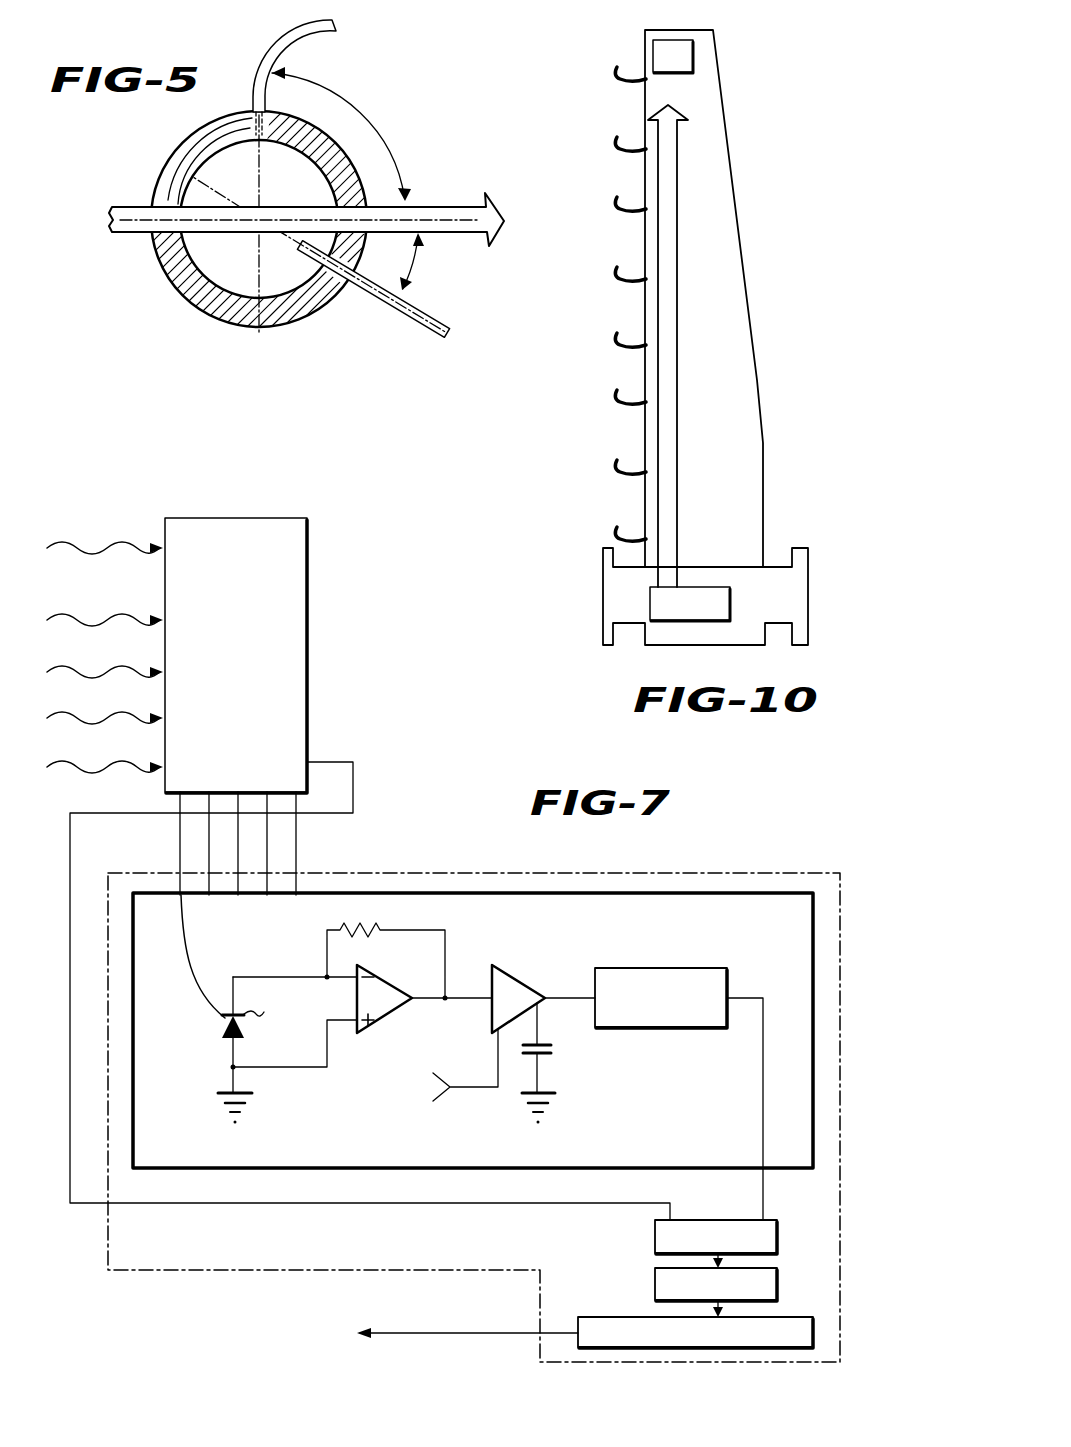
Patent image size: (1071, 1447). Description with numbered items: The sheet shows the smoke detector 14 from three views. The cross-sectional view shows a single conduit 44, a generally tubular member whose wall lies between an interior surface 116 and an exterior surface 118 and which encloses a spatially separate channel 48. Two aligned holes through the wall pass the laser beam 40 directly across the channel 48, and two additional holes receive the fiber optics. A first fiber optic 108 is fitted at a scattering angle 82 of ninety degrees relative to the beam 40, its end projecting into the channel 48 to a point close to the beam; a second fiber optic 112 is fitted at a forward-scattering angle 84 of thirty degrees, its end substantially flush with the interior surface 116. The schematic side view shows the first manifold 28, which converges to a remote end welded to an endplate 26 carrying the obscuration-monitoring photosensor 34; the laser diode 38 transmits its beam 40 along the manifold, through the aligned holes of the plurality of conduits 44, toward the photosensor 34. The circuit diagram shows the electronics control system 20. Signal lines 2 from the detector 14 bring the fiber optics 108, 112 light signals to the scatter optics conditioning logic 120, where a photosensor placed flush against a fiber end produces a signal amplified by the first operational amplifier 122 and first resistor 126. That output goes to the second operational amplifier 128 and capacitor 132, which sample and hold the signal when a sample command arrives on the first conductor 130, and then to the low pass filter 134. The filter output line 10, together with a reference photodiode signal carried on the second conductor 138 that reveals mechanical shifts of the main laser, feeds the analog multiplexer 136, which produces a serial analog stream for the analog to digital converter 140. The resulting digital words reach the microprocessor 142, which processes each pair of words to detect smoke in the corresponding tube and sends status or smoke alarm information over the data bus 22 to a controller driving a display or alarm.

In FIG. 5, the fiber optic 108 is at (313, 37).
In FIG. 7, the fiber optic 108 is at (191, 973).
In FIG. 5, the forward-scattering angle 84 is at (363, 108).
In FIG. 5, the channel 48 is at (306, 190).
In FIG. 5, the laser beam 40 is at (122, 232).
In FIG. 10, the laser beam 40 is at (677, 281).
In FIG. 5, the interior surface 116 is at (200, 255).
In FIG. 5, the exterior surface 118 is at (223, 323).
In FIG. 5, the conduit 44 is at (307, 323).
In FIG. 10, the conduit 44 is at (628, 362).
In FIG. 5, the scattering angle 82 is at (430, 268).
In FIG. 10, the obscuration-monitoring photosensor 34 is at (695, 50).
In FIG. 10, the first manifold 28 is at (737, 222).
In FIG. 10, the endplate 26 is at (724, 459).
In FIG. 10, the laser diode 38 is at (690, 620).
In FIG. 7, the smoke detector 14 is at (292, 500).
In FIG. 7, the second conductor 138 is at (353, 762).
In FIG. 7, the fiber channels 2 is at (299, 845).
In FIG. 7, the fiber optic 112 is at (147, 1007).
In FIG. 7, the first resistor 126 is at (382, 927).
In FIG. 7, the first operational amplifier 122 is at (402, 1012).
In FIG. 7, the second operational amplifier 128 is at (528, 975).
In FIG. 7, the low pass filter 134 is at (678, 967).
In FIG. 7, the capacitor 132 is at (545, 1056).
In FIG. 7, the first conductor 130 is at (475, 1089).
In FIG. 7, the scatter optics conditioning logic 120 is at (459, 1175).
In FIG. 7, the signal line 10 is at (757, 1197).
In FIG. 7, the analog multiplexer 136 is at (777, 1232).
In FIG. 7, the analog to digital converter 140 is at (777, 1282).
In FIG. 7, the microprocessor 142 is at (790, 1317).
In FIG. 7, the data bus 22 is at (453, 1342).
In FIG. 7, the electronics control system 20 is at (740, 863).